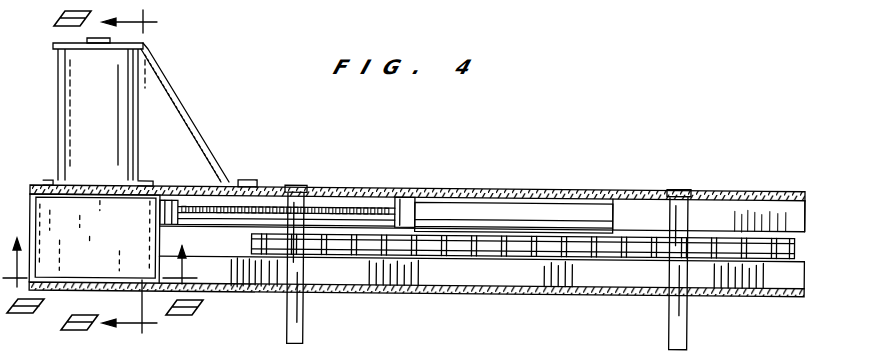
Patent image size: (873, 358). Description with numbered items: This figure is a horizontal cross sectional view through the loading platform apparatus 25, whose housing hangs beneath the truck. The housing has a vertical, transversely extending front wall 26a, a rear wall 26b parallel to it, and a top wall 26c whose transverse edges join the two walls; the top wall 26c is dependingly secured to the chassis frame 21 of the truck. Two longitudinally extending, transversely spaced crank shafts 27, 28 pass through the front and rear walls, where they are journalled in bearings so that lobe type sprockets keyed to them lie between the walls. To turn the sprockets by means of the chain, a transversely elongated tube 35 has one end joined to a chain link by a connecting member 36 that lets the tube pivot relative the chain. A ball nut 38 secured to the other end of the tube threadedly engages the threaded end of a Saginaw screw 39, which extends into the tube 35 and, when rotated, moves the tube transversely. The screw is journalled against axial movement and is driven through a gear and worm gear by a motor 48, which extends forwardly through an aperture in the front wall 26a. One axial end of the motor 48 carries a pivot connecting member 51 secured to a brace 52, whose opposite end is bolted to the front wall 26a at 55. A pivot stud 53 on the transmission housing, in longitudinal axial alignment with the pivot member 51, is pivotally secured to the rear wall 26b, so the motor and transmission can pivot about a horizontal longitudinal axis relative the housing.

The chassis frame 21 is at (754, 347).
The loading platform apparatus 25 is at (540, 296).
The front wall 26a is at (766, 163).
The rear wall 26b is at (415, 290).
The top wall 26c is at (752, 276).
The crank shaft 27 is at (306, 308).
The crank shaft 28 is at (673, 329).
The tube 35 is at (458, 210).
The connecting member 36 is at (602, 255).
The ball nut 38 is at (408, 200).
The Saginaw screw 39 is at (328, 200).
The motor 48 is at (108, 113).
The pivot connecting member 51 is at (98, 43).
The brace 52 is at (191, 118).
The pivot stud 53 is at (118, 258).
The bolt connection 55 is at (248, 180).